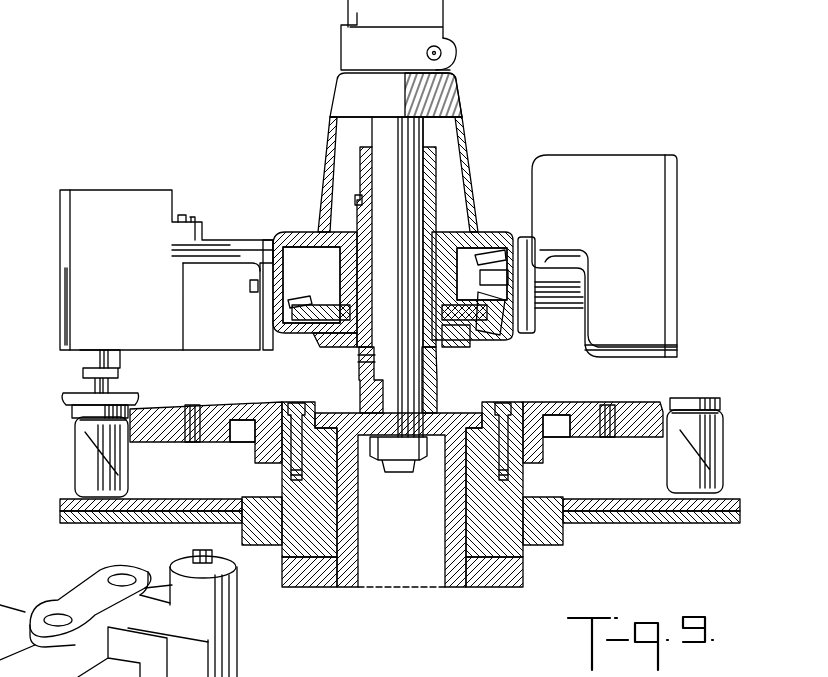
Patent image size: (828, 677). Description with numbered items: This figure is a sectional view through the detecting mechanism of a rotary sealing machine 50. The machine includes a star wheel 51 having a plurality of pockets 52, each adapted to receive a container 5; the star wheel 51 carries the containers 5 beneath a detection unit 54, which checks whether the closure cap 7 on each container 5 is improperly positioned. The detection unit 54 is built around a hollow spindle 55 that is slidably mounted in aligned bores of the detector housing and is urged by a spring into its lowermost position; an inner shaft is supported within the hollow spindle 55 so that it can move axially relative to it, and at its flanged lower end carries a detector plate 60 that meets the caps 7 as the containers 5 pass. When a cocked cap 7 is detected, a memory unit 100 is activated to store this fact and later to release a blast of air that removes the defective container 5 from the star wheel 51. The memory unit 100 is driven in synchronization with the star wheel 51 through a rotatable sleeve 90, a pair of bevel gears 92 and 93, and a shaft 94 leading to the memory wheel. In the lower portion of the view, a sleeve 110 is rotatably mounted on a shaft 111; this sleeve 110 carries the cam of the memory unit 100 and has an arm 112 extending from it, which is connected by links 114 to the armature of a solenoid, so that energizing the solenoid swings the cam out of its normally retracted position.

The container 5 is at (73, 459).
The closure cap 7 is at (72, 410).
The rotary sealing machine 50 is at (322, 149).
The star wheel 51 is at (205, 412).
The pocket 52 is at (140, 408).
The detection unit 54 is at (55, 299).
The hollow spindle 55 is at (110, 382).
The detector plate 60 is at (70, 395).
The rotatable sleeve 90 is at (360, 372).
The bevel gear 92 is at (482, 330).
The bevel gear 93 is at (488, 248).
The shaft 94 is at (506, 305).
The memory unit 100 is at (627, 155).
The sleeve 110 is at (232, 648).
The shaft 111 is at (212, 568).
The arm 112 is at (156, 592).
The link 114 is at (72, 600).